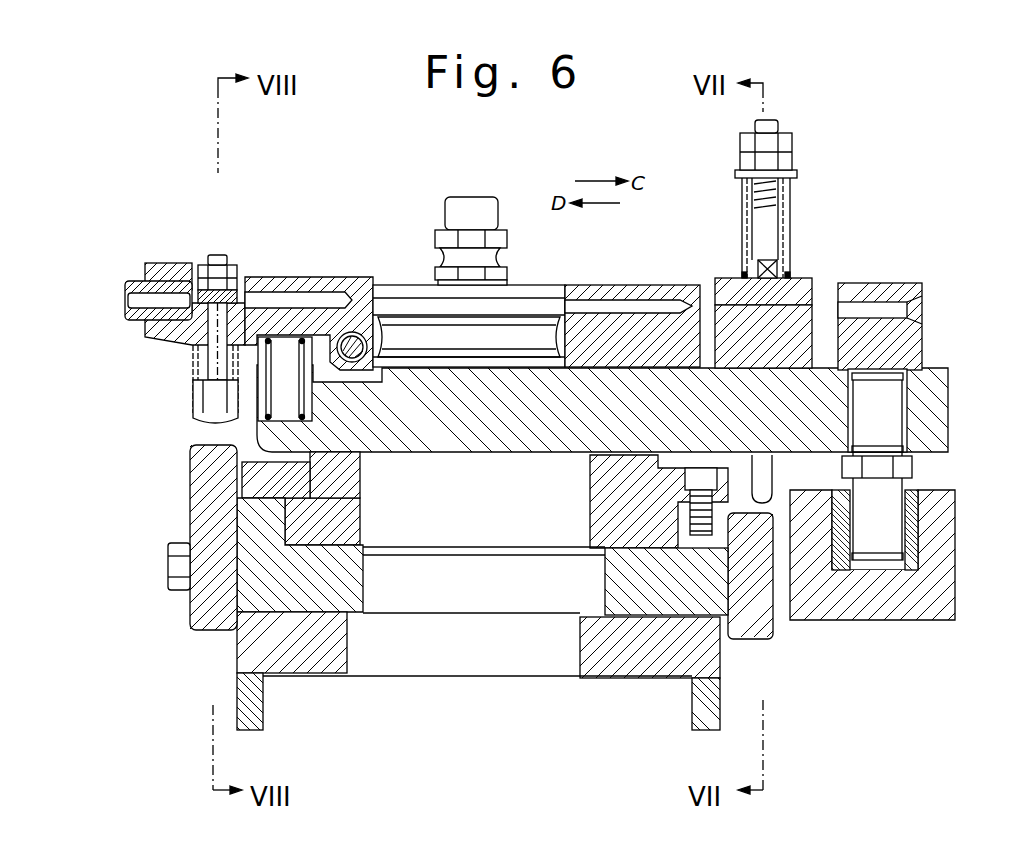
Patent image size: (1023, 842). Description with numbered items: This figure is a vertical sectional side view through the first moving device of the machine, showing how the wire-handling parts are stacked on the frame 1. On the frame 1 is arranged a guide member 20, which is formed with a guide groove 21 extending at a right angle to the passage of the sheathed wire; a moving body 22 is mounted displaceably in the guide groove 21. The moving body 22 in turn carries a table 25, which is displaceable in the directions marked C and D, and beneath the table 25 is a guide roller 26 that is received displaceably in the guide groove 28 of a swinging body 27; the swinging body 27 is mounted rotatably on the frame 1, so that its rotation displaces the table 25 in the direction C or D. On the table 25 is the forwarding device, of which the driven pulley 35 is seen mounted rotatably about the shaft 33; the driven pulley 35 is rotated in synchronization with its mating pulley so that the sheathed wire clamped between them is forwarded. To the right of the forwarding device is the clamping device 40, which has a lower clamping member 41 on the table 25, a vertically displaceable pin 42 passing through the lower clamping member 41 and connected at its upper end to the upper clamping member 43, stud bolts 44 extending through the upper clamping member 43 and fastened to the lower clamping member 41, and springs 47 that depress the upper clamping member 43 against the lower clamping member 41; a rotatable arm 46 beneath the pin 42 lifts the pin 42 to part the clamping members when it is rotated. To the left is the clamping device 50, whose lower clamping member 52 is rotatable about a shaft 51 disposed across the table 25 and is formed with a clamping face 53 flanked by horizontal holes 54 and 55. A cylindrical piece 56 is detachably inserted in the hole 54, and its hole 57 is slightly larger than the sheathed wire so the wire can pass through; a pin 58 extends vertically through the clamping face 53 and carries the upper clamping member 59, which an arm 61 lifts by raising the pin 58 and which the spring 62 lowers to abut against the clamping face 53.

The frame 1 is at (237, 650).
The guide member 20 is at (365, 586).
The guide groove 21 is at (363, 484).
The moving body 22 is at (356, 508).
The table 25 is at (510, 452).
The guide roller 26 is at (920, 492).
The swinging body 27 is at (915, 620).
The guide groove 28 is at (916, 522).
The shaft 33 is at (478, 197).
The driven pulley 35 is at (538, 298).
The clamping device 40 is at (738, 260).
The lower clamping member 41 is at (808, 318).
The pin 42 is at (771, 474).
The upper clamping member 43 is at (808, 279).
The stud bolts 44 is at (775, 121).
The rotatable arm 46 is at (773, 640).
The springs 47 is at (790, 201).
The clamping device 50 is at (139, 270).
The shaft 51 is at (366, 277).
The lower clamping member 52 is at (334, 277).
The clamping face 53 is at (220, 256).
The hole 54 is at (130, 296).
The hole 55 is at (302, 299).
The cylindrical piece 56 is at (146, 325).
The hole 57 is at (152, 300).
The pin 58 is at (201, 362).
The upper clamping member 59 is at (206, 263).
The arm 61 is at (190, 612).
The spring 62 is at (196, 400).